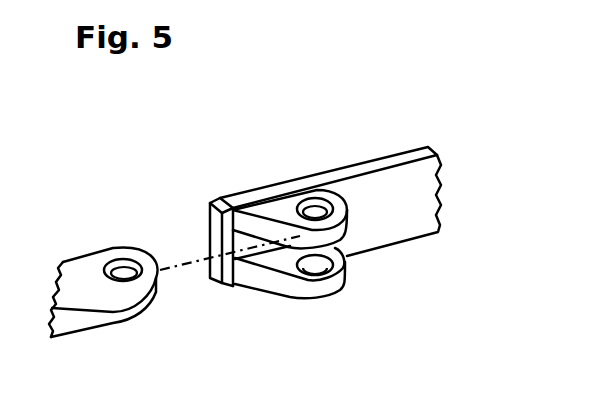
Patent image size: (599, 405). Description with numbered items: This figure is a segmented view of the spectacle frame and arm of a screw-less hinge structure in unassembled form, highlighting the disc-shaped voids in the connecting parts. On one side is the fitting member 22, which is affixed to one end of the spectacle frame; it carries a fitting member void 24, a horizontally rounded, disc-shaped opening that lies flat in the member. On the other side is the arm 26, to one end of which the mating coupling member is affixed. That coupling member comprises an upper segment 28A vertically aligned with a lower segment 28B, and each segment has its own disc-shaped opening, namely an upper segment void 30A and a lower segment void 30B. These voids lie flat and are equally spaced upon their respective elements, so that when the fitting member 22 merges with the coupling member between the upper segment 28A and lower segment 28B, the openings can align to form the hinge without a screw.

The fitting member 22 is at (103, 312).
The fitting member void 24 is at (118, 275).
The arm 26 is at (425, 202).
The upper segment 28A is at (280, 212).
The lower segment 28B is at (278, 262).
The upper segment void 30A is at (317, 212).
The lower segment void 30B is at (320, 268).